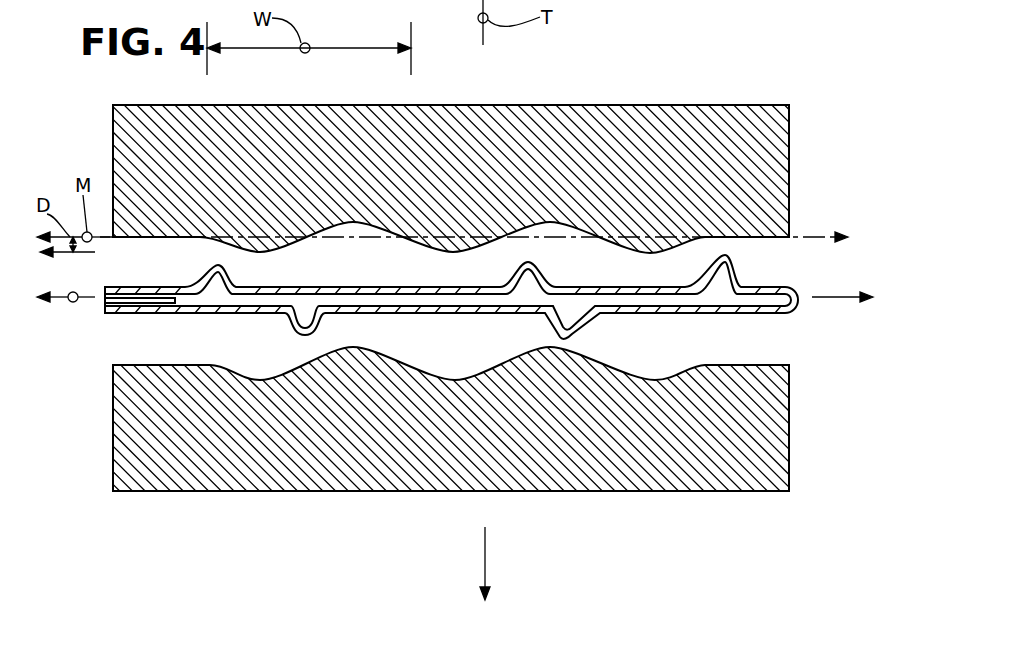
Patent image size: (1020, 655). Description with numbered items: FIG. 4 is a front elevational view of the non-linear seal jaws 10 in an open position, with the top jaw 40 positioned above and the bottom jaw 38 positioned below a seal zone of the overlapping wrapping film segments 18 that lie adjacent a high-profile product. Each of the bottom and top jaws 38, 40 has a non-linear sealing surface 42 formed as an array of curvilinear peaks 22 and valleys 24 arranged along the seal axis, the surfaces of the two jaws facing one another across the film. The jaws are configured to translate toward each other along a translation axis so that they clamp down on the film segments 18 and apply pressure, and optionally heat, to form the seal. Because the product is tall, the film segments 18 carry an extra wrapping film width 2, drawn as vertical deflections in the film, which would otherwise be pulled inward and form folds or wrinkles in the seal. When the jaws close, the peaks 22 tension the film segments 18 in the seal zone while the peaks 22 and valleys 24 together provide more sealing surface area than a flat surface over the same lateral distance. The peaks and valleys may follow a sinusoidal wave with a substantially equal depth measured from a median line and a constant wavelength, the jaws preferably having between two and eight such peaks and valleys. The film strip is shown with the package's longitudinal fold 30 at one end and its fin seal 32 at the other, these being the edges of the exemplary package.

The non-linear seal jaws 10 is at (818, 93).
The top jaw 40 is at (768, 150).
The bottom jaw 38 is at (790, 420).
The curvilinear peaks 22 is at (262, 250).
The valleys 24 is at (350, 222).
The non-linear sealing surface 42 is at (723, 237).
The overlapping wrapping film segments 18 is at (740, 315).
The extra wrapping film width 2 is at (205, 268).
The longitudinal fold 30 is at (800, 292).
The fin seal 32 is at (73, 305).